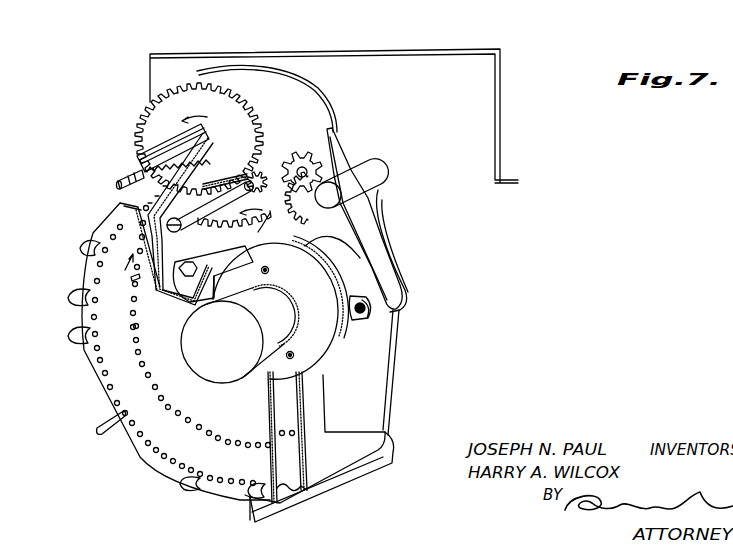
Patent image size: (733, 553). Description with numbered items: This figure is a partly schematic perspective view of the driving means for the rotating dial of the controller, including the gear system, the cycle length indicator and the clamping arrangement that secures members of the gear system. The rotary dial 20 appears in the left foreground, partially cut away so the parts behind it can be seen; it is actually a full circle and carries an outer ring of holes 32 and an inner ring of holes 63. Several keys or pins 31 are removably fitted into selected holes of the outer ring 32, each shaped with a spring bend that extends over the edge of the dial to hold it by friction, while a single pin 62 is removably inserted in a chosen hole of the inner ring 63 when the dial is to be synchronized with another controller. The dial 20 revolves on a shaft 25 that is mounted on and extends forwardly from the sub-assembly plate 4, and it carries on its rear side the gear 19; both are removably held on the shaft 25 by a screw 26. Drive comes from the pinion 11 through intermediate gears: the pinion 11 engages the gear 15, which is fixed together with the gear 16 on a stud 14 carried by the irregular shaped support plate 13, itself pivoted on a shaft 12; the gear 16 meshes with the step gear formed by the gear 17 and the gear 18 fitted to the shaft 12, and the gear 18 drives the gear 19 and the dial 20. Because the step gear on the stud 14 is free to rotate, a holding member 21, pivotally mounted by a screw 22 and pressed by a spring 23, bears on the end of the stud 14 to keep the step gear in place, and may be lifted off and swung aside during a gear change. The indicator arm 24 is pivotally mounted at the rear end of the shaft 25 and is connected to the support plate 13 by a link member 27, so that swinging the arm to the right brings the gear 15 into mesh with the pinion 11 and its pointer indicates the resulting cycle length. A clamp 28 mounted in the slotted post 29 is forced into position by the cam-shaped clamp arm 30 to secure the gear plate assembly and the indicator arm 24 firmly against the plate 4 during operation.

The sub-assembly plate 4 is at (503, 109).
The pinion 11 is at (303, 192).
The shaft 12 is at (120, 184).
The support plate 13 is at (317, 95).
The stud 14 is at (252, 190).
The gear 15 is at (290, 216).
The gear 16 is at (259, 173).
The gear 17 is at (138, 136).
The gear 18 is at (133, 165).
The gear 19 is at (305, 432).
The rotary dial 20 is at (145, 455).
The holding member 21 is at (203, 218).
The screw 22 is at (173, 232).
The spring 23 is at (180, 228).
The indicator arm 24 is at (390, 400).
The shaft 25 is at (362, 313).
The screw 26 is at (214, 382).
The link member 27 is at (208, 263).
The clamp 28 is at (378, 208).
The slotted post 29 is at (378, 169).
The clamp arm 30 is at (407, 292).
The pin 31 is at (245, 502).
The outer ring of holes 32 is at (93, 375).
The pin 62 is at (132, 279).
The inner ring of holes 63 is at (138, 328).